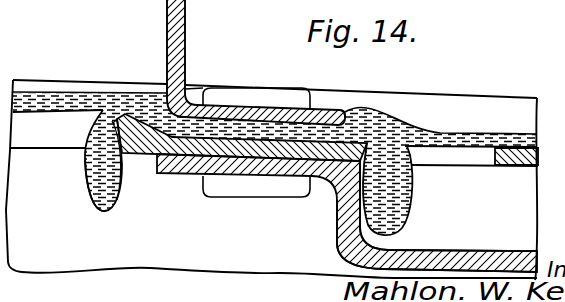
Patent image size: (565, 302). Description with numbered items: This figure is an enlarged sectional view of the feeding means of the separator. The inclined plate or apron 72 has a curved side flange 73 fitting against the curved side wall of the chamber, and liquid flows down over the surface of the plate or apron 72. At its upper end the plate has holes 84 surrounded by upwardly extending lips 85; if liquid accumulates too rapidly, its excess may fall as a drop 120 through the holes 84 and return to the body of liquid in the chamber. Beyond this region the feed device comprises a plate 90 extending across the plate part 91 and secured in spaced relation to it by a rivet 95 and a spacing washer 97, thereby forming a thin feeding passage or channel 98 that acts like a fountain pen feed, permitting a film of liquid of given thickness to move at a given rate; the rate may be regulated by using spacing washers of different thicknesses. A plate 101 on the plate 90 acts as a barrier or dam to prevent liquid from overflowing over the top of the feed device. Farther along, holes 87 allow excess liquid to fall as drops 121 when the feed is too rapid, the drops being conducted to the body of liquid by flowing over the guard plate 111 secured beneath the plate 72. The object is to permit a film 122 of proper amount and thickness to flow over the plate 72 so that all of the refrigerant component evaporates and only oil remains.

The inclined plate or apron 72 is at (55, 79).
The curved side flange 73 is at (37, 271).
The holes 84 is at (68, 146).
The upwardly extending lips 85 is at (122, 178).
The holes 87 is at (463, 160).
The plate 90 is at (338, 110).
The plate part 91 is at (313, 150).
The rivet 95 is at (258, 97).
The spacing washer 97 is at (185, 130).
The feeding passage or channel 98 is at (262, 133).
The plate 101 is at (167, 32).
The guard plate 111 is at (512, 239).
The drop 120 is at (84, 173).
The drops 121 is at (460, 213).
The film 122 is at (477, 124).